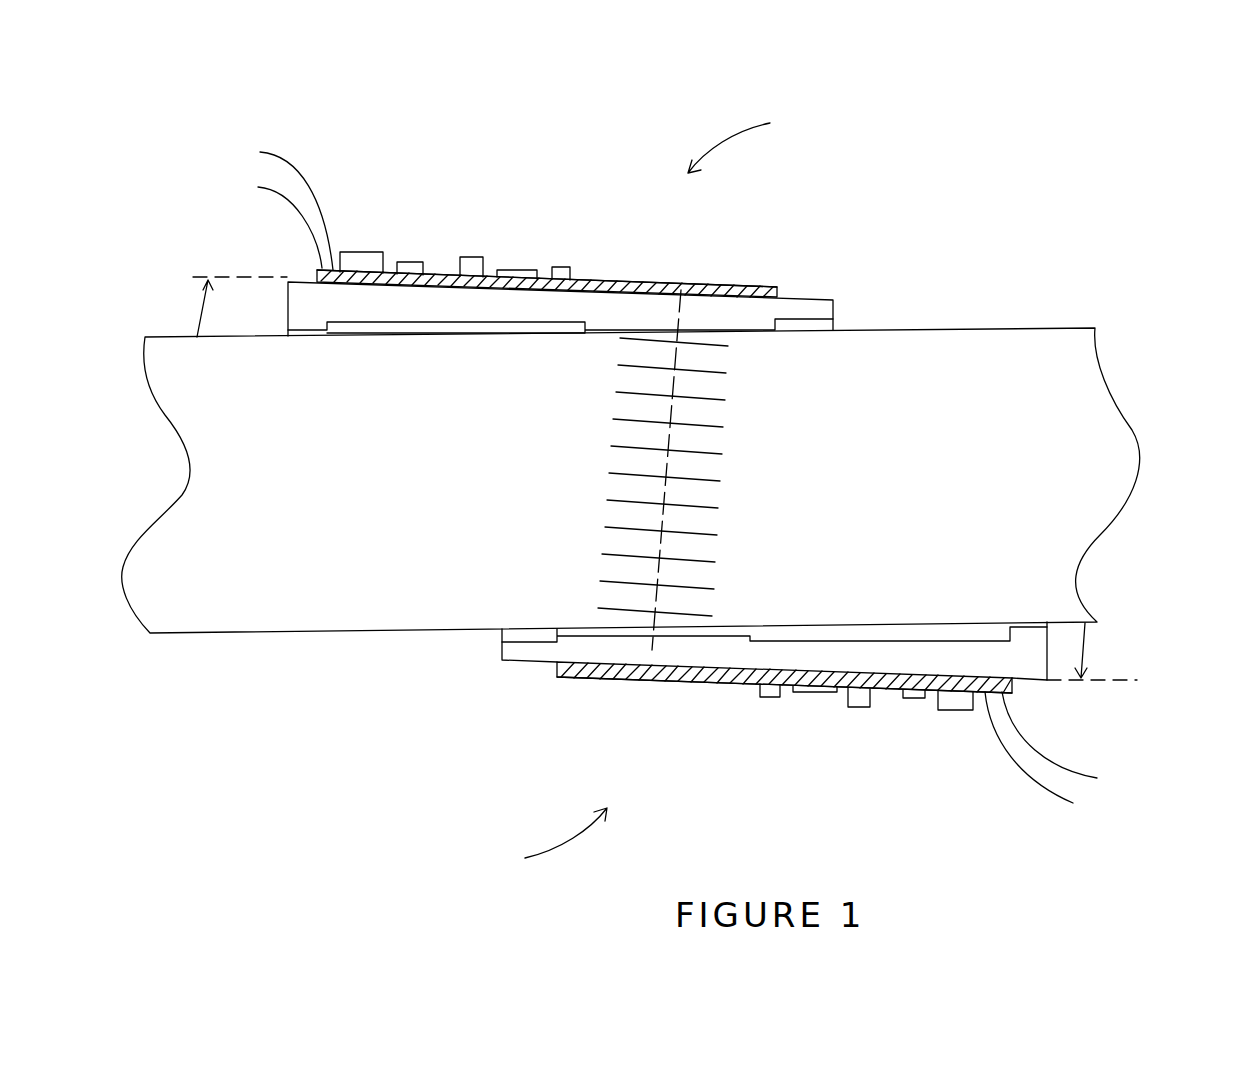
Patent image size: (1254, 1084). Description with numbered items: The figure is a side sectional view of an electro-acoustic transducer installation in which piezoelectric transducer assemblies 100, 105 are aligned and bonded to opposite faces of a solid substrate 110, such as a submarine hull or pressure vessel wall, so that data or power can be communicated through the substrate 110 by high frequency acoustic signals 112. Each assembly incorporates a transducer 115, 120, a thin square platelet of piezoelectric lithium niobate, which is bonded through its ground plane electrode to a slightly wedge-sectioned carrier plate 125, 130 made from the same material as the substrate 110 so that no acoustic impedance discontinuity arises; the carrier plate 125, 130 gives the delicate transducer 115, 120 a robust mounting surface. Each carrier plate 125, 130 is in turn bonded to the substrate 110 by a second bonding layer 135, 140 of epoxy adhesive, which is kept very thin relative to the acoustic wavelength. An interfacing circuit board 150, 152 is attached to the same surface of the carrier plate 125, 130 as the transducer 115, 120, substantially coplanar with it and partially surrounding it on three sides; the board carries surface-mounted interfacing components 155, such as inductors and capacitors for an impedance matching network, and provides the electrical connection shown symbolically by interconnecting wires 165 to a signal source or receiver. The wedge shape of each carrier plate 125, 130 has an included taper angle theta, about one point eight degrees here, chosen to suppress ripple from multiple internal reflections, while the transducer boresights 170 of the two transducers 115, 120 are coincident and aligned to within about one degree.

The piezoelectric transducer assembly 100 is at (758, 141).
The piezoelectric transducer assembly 105 is at (531, 841).
The solid substrate 110 is at (1065, 375).
The high frequency acoustic signals 112 is at (720, 427).
The transducer 115 is at (730, 287).
The transducer 120 is at (597, 680).
The carrier plate 125 is at (300, 292).
The carrier plate 130 is at (1032, 672).
The second bonding layer 135 is at (307, 335).
The second bonding layer 140 is at (578, 627).
The interfacing circuit board 150 is at (445, 273).
The interfacing circuit board 152 is at (887, 700).
The interfacing components 155 is at (473, 255).
The interconnecting wires 165 is at (283, 157).
The transducer boresights 170 is at (670, 463).